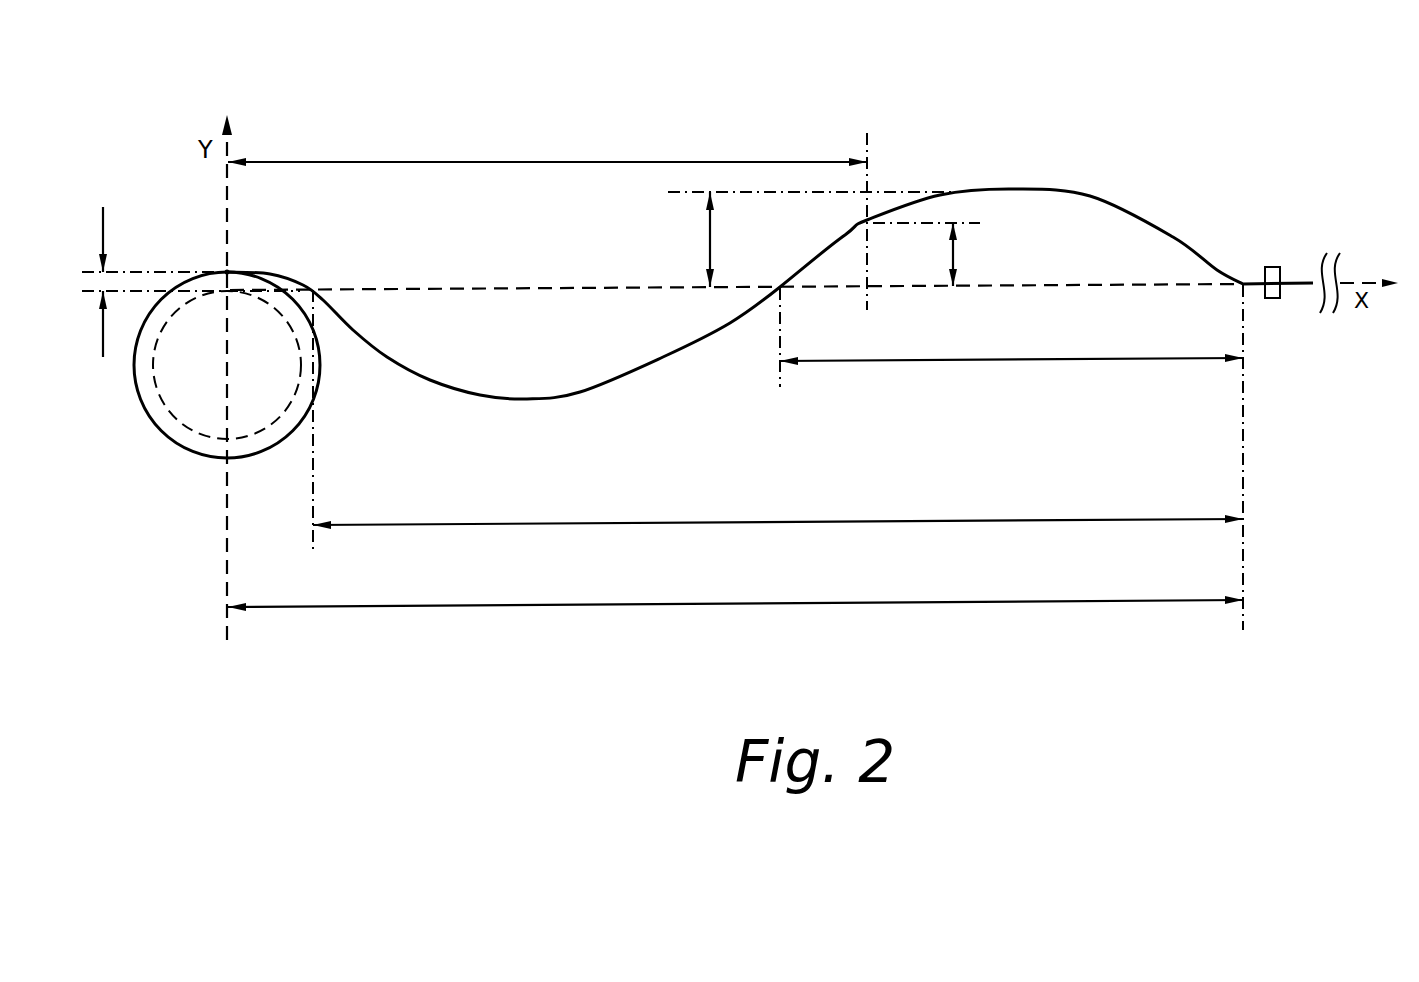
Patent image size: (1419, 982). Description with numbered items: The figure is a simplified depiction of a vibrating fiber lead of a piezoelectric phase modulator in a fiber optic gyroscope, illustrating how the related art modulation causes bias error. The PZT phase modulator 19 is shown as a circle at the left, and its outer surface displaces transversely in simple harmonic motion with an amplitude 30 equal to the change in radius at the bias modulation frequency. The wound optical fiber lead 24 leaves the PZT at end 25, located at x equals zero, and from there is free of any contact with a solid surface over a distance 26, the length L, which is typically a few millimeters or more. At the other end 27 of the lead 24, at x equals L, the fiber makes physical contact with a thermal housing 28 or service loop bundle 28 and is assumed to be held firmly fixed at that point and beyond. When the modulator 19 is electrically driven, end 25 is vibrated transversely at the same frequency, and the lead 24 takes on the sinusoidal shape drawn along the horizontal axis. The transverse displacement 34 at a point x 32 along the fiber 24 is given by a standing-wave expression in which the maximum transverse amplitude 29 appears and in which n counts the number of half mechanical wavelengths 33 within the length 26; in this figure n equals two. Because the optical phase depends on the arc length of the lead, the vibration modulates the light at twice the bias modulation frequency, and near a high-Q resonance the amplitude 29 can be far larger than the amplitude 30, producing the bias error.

The PZT phase modulator 19 is at (268, 385).
The optical fiber lead 24 is at (488, 395).
The fiber lead end 25 is at (227, 272).
The distance 26 is at (638, 605).
The other end 27 is at (1245, 377).
The thermal housing 28 is at (1272, 267).
The maximum transverse amplitude 29 is at (708, 240).
The amplitude 30 is at (103, 233).
The point x 32 is at (490, 162).
The half mechanical wavelength 33 is at (997, 362).
The displacement 34 is at (957, 257).